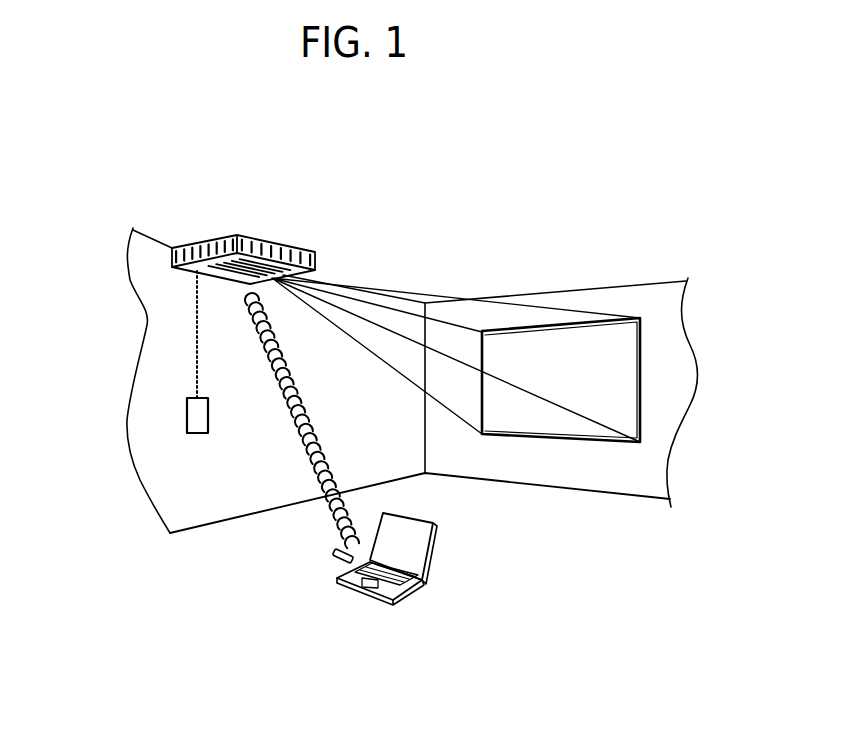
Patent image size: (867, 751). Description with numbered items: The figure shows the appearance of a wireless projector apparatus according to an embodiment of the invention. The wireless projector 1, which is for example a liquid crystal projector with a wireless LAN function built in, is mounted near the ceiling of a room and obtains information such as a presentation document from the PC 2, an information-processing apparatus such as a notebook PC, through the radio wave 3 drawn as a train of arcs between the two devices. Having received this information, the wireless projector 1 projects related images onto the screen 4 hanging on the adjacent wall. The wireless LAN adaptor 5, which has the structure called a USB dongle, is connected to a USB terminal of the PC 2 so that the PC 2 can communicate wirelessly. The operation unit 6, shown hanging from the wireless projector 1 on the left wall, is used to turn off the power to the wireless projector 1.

The wireless projector 1 is at (250, 242).
The PC 2 is at (418, 555).
The radio wave 3 is at (293, 422).
The screen 4 is at (620, 343).
The wireless LAN adaptor 5 is at (335, 557).
The operation unit 6 is at (185, 422).